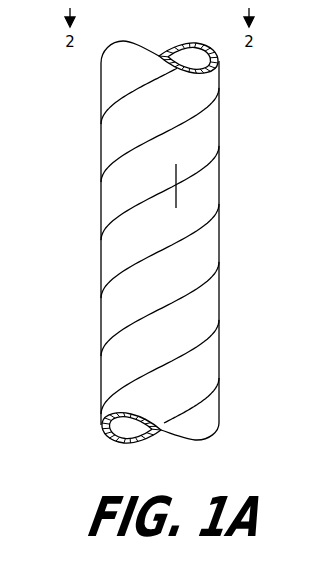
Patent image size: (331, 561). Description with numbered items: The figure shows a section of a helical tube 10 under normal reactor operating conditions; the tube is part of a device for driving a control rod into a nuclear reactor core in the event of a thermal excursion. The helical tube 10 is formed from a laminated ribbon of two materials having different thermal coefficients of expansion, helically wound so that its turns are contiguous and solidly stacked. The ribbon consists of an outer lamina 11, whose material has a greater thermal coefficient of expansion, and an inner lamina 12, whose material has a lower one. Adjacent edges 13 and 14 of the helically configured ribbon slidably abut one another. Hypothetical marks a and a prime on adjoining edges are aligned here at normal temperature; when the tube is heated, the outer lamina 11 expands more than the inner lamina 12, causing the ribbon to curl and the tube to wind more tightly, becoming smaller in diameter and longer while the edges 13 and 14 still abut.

The helical tube 10 is at (82, 207).
The outer lamina 11 is at (150, 125).
The inner lamina 12 is at (196, 60).
The edge 13 is at (150, 255).
The edge 14 is at (182, 237).